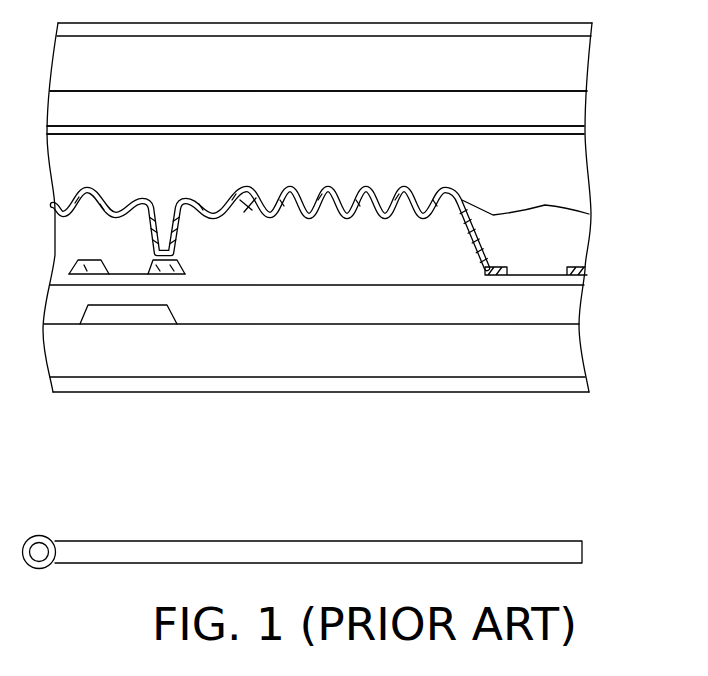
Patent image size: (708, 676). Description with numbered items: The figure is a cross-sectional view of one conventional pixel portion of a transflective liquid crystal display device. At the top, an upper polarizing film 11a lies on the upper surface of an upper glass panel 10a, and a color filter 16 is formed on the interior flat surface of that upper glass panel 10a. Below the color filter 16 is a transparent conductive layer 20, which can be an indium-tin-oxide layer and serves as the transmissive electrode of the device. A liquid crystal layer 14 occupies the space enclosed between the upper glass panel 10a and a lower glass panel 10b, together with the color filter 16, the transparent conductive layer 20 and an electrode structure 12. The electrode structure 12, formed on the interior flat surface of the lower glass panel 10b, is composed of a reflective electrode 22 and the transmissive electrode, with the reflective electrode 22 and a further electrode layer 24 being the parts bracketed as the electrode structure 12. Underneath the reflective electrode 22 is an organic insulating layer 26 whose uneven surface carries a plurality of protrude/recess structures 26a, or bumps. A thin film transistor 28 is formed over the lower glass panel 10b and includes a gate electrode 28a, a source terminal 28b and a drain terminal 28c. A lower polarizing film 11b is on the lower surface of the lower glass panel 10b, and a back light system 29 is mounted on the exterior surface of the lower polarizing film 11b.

The upper polarizing film 11a is at (569, 32).
The upper glass panel 10a is at (371, 78).
The color filter 16 is at (550, 112).
The transparent conductive layer 20 is at (560, 132).
The liquid crystal layer 14 is at (557, 187).
The reflective electrode 22 is at (589, 214).
The transparent electrode 24 is at (537, 282).
The electrode structure 12 is at (665, 195).
The organic insulating layer 26 is at (350, 273).
The protrude/recess structures 26a is at (270, 184).
The thin film transistor 28 is at (230, 473).
The gate electrode 28a is at (142, 313).
The source terminal 28b is at (85, 267).
The drain terminal 28c is at (162, 268).
The lower glass panel 10b is at (368, 363).
The lower polarizing film 11b is at (569, 387).
The back light system 29 is at (560, 553).